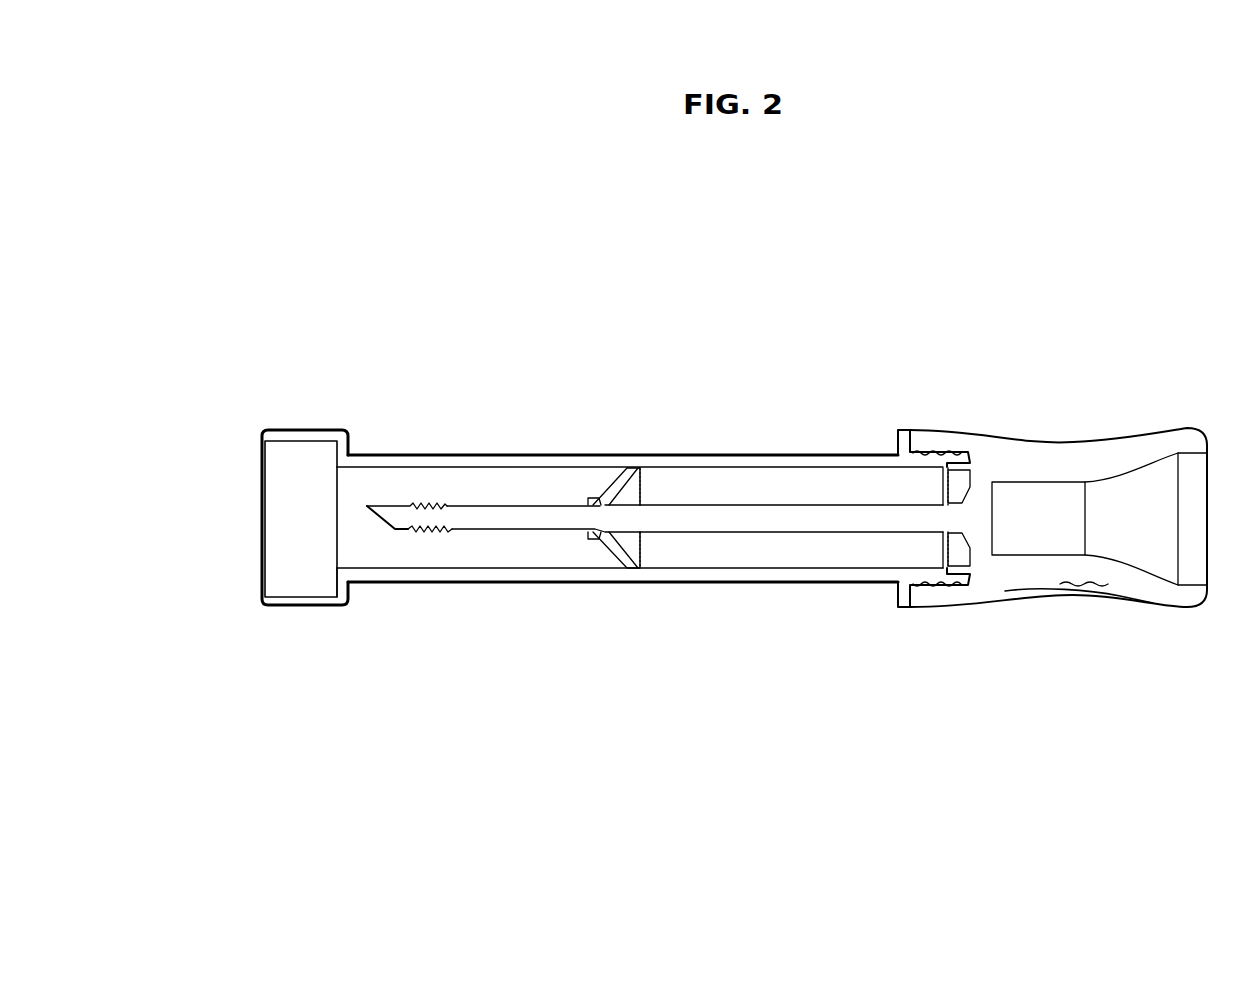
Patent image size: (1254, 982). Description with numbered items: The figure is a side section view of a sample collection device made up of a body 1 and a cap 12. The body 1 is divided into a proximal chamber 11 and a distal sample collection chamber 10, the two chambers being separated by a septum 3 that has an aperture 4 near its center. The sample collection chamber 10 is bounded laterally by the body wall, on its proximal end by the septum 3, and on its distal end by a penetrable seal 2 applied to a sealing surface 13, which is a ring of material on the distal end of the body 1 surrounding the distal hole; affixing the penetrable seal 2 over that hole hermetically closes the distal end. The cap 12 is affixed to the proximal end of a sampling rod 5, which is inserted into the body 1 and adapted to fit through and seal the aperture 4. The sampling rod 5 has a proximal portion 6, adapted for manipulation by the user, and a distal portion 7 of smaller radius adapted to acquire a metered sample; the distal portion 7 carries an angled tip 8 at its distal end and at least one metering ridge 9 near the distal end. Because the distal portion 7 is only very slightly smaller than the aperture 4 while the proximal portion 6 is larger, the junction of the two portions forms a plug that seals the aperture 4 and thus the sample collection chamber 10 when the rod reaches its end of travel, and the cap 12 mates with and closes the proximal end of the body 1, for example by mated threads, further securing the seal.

The body 1 is at (818, 455).
The penetrable seal 2 is at (333, 518).
The septum 3 is at (618, 555).
The aperture 4 is at (592, 518).
The sampling rod 5 is at (507, 522).
The proximal portion 6 is at (807, 515).
The distal portion 7 is at (473, 506).
The angled tip 8 is at (375, 528).
The metering ridge 9 is at (422, 506).
The distal sample collection chamber 10 is at (528, 548).
The proximal chamber 11 is at (707, 547).
The cap 12 is at (1013, 425).
The sealing surface 13 is at (336, 583).